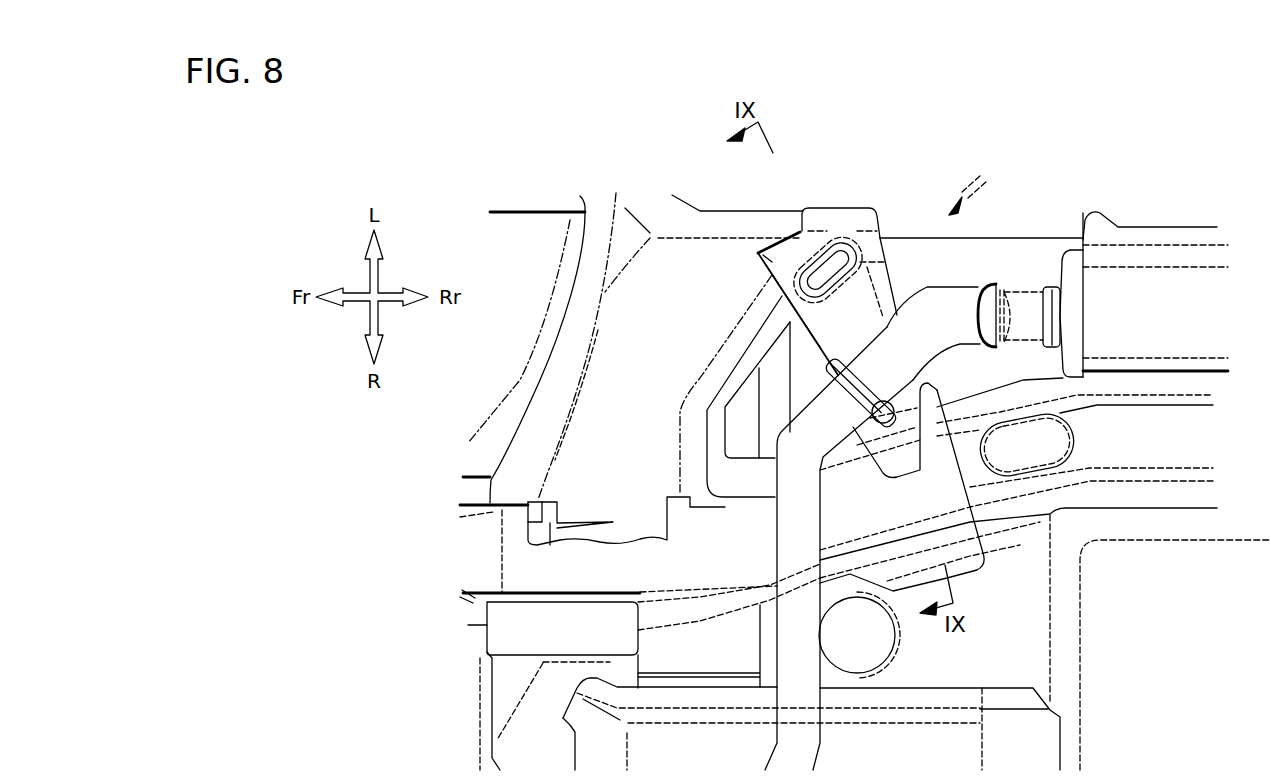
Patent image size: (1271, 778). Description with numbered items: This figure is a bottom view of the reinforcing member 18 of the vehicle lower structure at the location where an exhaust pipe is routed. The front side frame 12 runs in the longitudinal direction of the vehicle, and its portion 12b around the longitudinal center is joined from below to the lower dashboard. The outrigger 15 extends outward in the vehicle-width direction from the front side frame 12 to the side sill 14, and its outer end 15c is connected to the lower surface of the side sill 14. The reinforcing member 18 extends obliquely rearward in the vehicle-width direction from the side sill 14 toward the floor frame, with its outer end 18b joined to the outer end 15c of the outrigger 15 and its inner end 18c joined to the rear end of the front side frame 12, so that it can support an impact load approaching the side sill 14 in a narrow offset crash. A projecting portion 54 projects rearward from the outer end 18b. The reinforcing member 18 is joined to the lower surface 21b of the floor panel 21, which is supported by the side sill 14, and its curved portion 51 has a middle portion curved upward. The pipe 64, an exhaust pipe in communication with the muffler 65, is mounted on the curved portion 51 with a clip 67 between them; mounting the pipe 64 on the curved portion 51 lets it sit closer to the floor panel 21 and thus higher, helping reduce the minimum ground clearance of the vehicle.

The front side frame 12 is at (467, 600).
The portion of the front side frame 12b is at (582, 606).
The side sill 14 is at (958, 205).
The outrigger 15 is at (587, 398).
The outer end of the outrigger 15c is at (770, 218).
The reinforcing member 18 is at (893, 284).
The outer end of the reinforcing member 18b is at (757, 258).
The inner end of the reinforcing member 18c is at (887, 480).
The floor panel 21 is at (1035, 378).
The lower surface of the floor panel 21b is at (1037, 380).
The curved portion 51 is at (822, 355).
The projecting portion 54 is at (862, 212).
The pipe 64 is at (777, 538).
The muffler 65 is at (1185, 282).
The clip 67 is at (873, 380).